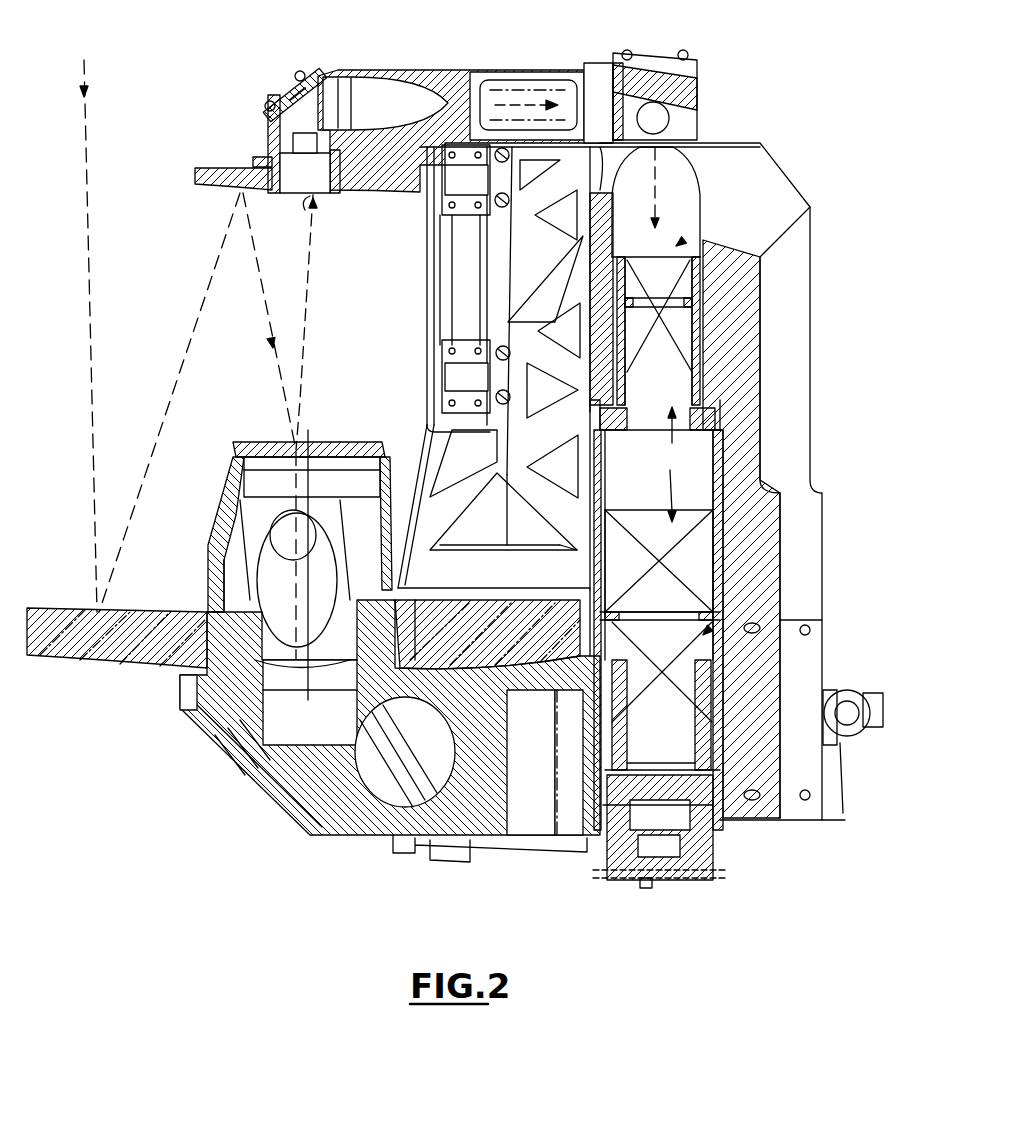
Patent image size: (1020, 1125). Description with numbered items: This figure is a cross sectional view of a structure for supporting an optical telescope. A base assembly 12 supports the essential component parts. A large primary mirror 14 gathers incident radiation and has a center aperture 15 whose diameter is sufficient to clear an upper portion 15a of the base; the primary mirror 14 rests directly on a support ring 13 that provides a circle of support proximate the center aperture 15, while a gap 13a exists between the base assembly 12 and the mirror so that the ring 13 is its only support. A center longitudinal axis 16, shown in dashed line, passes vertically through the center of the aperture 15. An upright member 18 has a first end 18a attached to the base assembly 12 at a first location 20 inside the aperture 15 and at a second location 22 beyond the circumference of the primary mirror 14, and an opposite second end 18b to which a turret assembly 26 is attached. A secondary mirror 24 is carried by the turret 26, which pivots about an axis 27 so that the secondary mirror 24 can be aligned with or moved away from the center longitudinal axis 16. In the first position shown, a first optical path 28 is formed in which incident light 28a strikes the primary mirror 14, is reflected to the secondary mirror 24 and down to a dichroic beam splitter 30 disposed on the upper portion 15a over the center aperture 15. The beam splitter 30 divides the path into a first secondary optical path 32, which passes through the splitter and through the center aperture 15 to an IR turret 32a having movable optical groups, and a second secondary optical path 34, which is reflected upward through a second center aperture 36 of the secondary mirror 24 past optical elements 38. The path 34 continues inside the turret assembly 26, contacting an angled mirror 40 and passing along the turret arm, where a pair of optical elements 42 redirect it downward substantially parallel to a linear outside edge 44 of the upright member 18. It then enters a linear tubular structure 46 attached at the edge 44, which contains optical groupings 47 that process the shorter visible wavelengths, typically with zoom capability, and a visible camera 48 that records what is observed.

The base assembly 12 is at (372, 846).
The support ring 13 is at (188, 688).
The gap 13a is at (502, 740).
The primary mirror 14 is at (105, 657).
The center aperture 15 is at (207, 625).
The upper portion 15a is at (208, 612).
The center longitudinal axis 16 is at (308, 445).
The upright member 18 is at (428, 295).
The first end 18a is at (556, 620).
The second end 18b is at (494, 165).
The first location 20 is at (418, 538).
The second location 22 is at (580, 590).
The secondary mirror 24 is at (206, 188).
The turret assembly 26 is at (432, 61).
The axis 27 is at (468, 162).
The first optical path 28 is at (250, 310).
The incident light 28a is at (88, 158).
The dichroic beam splitter 30 is at (250, 442).
The first secondary optical path 32 is at (290, 485).
The IR turret 32a is at (275, 572).
The second secondary optical path 34 is at (532, 96).
The second center aperture 36 is at (305, 203).
The optical elements 38 is at (290, 196).
The angled mirror 40 is at (318, 78).
The optical elements 42 is at (702, 120).
The linear outside edge 44 is at (578, 298).
The linear tubular structure 46 is at (700, 385).
The optical groupings 47 is at (680, 243).
The visible camera 48 is at (712, 845).